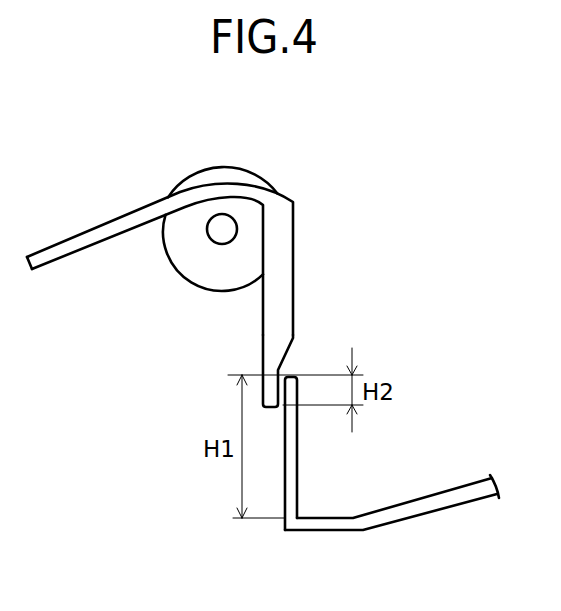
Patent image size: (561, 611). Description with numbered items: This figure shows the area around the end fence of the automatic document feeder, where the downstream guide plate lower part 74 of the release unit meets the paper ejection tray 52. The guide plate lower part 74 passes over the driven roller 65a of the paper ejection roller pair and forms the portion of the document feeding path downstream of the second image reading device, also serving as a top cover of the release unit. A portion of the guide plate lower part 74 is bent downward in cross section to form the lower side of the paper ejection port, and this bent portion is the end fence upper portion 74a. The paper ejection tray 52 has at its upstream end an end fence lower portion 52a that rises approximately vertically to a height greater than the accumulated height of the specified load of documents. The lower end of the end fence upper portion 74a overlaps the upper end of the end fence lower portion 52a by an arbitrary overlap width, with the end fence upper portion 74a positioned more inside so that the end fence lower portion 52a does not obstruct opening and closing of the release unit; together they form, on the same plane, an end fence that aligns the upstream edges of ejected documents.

The paper ejection tray 52 is at (420, 514).
The end fence lower portion 52a is at (285, 492).
The driven roller of the paper ejection roller pair 65a is at (227, 172).
The guide plate lower part 74 is at (67, 242).
The end fence upper portion 74a is at (263, 327).